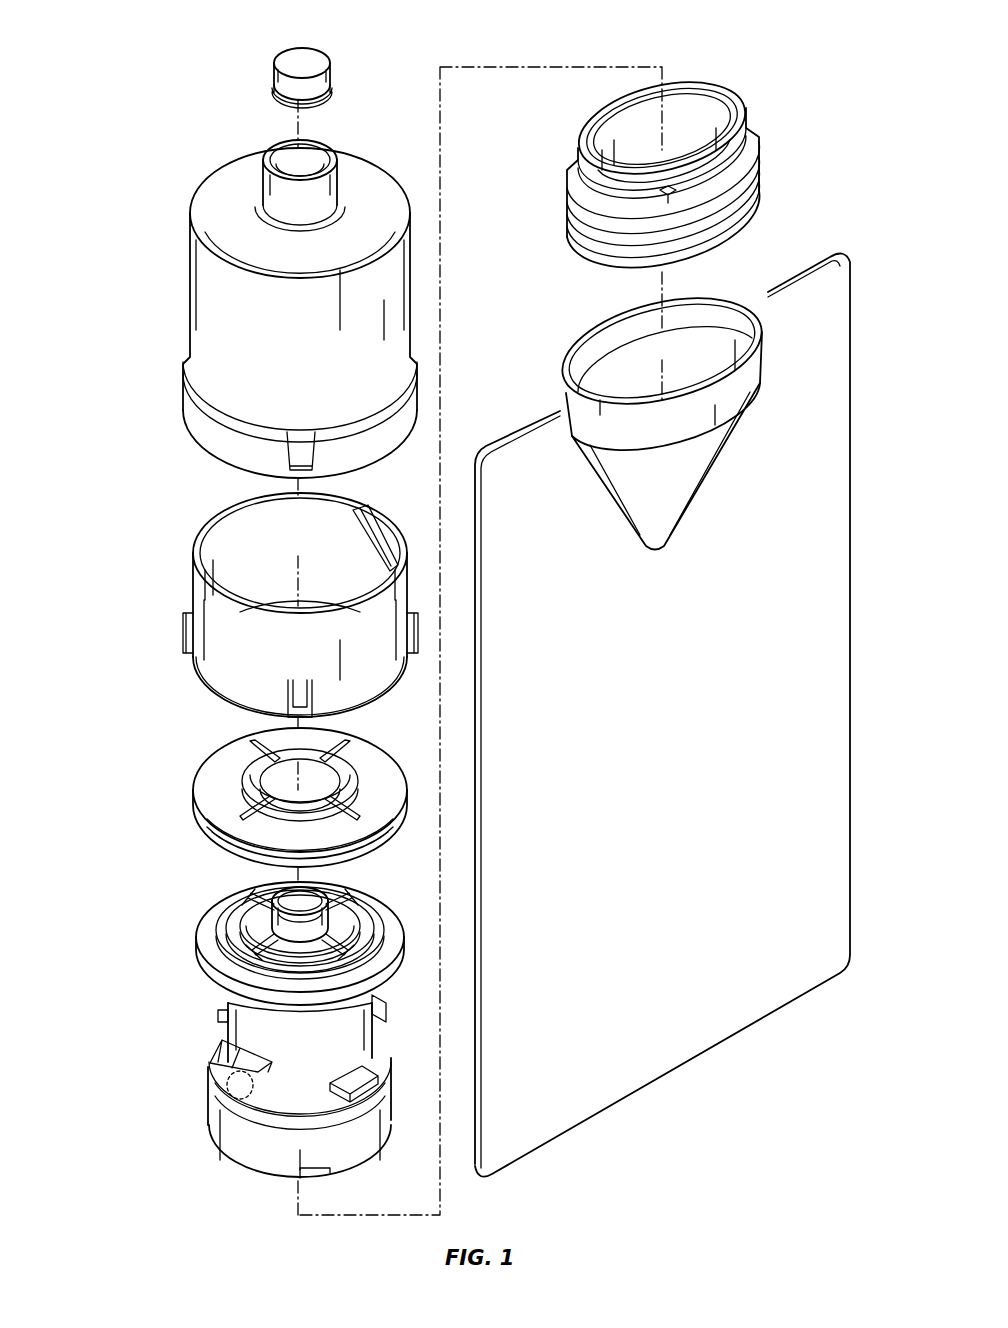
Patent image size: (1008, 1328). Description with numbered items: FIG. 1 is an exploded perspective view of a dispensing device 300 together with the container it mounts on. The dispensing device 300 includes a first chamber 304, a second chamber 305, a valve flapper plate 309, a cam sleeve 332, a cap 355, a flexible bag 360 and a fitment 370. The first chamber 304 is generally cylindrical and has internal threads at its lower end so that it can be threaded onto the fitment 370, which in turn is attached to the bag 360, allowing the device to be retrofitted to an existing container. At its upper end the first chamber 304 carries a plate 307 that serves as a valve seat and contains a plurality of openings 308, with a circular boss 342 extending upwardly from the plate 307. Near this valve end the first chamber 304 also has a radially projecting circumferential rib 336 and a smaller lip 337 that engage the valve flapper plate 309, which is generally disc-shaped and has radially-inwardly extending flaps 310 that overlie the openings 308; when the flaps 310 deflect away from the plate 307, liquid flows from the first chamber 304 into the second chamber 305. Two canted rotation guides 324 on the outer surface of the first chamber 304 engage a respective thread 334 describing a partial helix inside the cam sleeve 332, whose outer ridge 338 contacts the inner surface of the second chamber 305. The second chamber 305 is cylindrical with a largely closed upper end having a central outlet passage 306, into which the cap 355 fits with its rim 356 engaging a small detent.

The dispensing device 300 is at (145, 875).
The first chamber 304 is at (176, 1078).
The second chamber 305 is at (156, 387).
The outlet passage 306 is at (288, 155).
The plate 307 is at (258, 938).
The openings 308 is at (245, 928).
The valve flapper plate 309 is at (176, 765).
The flaps 310 is at (340, 753).
The rotation guides 324 is at (245, 1095).
The cam sleeve 332 is at (156, 609).
The thread 334 is at (355, 515).
The circumferential rib 336 is at (215, 960).
The lip 337 is at (250, 960).
The ridge 338 is at (187, 662).
The circular boss 342 is at (303, 905).
The cap 355 is at (306, 60).
The rim 356 is at (334, 88).
The flexible bag 360 is at (752, 988).
The fitment 370 is at (745, 120).